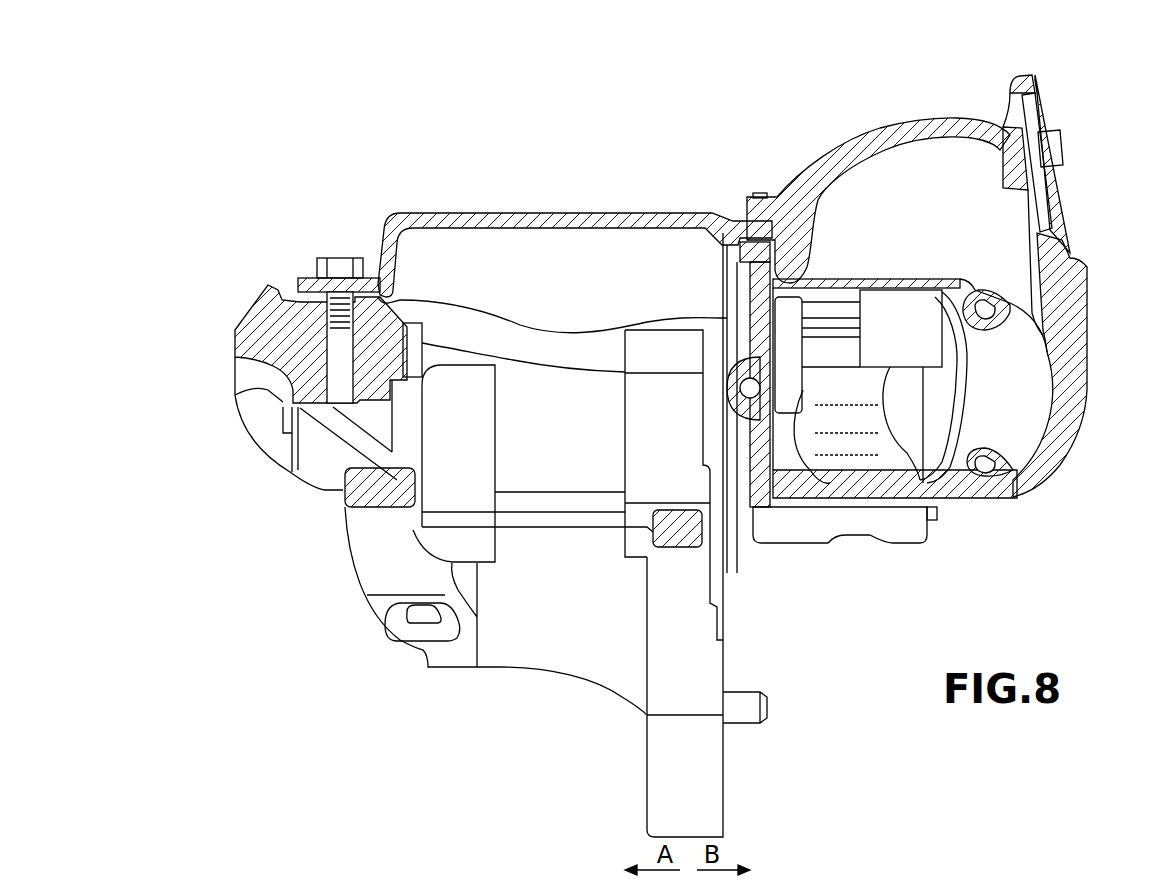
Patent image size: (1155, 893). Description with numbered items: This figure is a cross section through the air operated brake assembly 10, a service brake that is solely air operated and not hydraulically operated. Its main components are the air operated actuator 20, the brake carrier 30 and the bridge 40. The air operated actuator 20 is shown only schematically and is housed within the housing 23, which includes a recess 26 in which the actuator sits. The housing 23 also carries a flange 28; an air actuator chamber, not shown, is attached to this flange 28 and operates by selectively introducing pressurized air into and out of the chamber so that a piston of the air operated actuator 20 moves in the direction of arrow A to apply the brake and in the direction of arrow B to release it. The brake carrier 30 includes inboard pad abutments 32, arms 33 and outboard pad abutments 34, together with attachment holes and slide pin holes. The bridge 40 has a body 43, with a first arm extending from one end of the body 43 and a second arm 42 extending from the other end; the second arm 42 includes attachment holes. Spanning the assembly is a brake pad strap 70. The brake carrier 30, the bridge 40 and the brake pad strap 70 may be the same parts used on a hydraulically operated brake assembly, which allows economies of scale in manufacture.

The air operated brake assembly 10 is at (1092, 123).
The air operated actuator 20 is at (896, 331).
The housing 23 is at (1050, 460).
The recess 26 is at (899, 218).
The flange 28 is at (1038, 78).
The brake carrier 30 is at (723, 797).
The inboard pad abutments 32 is at (655, 439).
The arms 33 is at (552, 668).
The outboard pad abutments 34 is at (448, 439).
The bridge 40 is at (267, 452).
The second arm 42 is at (534, 370).
The body 43 is at (265, 292).
The brake pad strap 70 is at (533, 212).